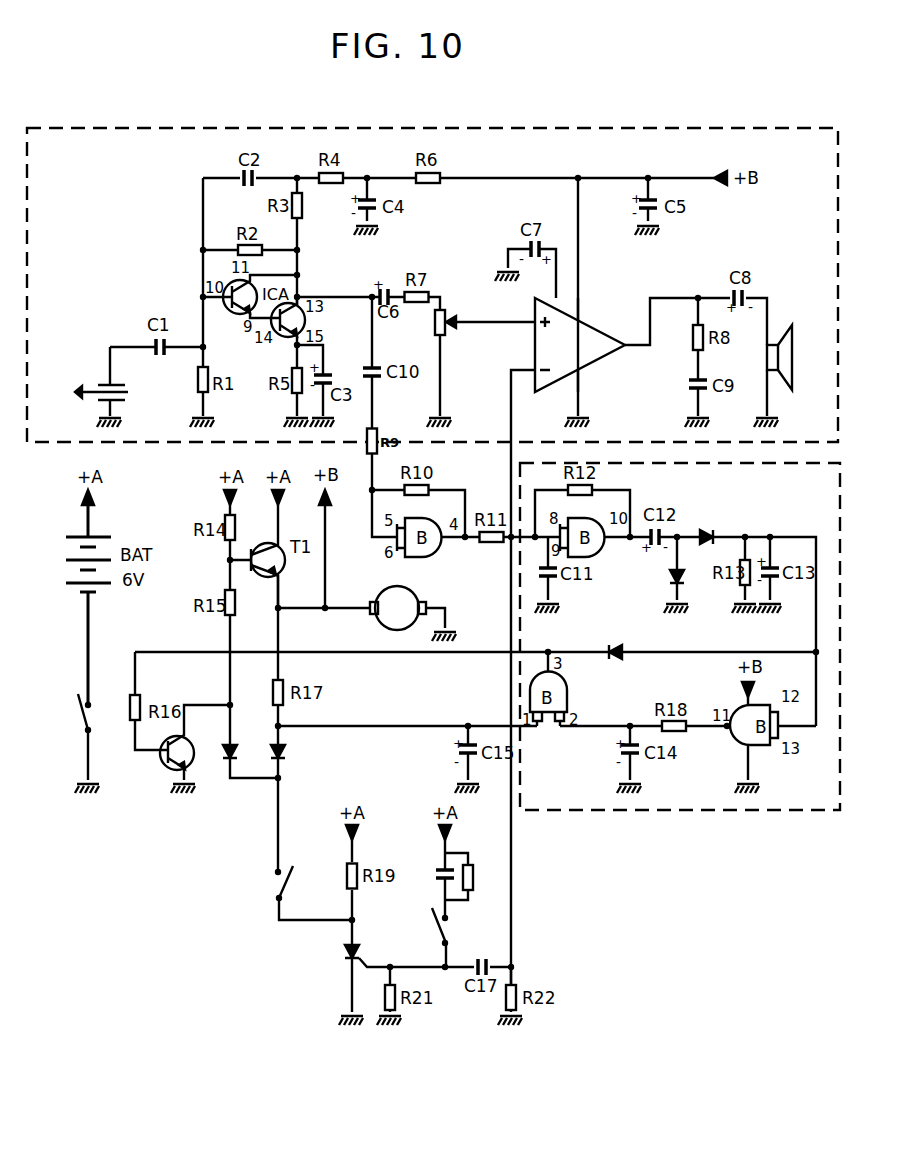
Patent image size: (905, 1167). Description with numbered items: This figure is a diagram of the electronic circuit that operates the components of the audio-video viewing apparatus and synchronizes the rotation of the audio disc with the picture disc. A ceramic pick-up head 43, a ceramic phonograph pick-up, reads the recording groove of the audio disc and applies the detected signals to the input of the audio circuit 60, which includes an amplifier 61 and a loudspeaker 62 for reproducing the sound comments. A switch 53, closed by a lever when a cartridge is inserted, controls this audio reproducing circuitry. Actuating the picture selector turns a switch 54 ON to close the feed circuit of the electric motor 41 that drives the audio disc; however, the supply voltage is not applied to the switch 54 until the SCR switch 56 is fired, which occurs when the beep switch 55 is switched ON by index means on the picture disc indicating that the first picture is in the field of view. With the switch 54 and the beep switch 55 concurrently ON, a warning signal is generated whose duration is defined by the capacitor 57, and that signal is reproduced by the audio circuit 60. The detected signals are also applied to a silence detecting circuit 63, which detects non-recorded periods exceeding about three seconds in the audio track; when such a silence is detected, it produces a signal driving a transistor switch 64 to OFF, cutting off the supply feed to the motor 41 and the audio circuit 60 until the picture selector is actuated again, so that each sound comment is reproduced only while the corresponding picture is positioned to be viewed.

The electric motor 41 is at (410, 600).
The ceramic pick-up head 43 is at (107, 338).
The switch 53 is at (85, 726).
The switch 54 is at (277, 882).
The beep switch 55 is at (450, 942).
The SCR switch 56 is at (350, 965).
The capacitor 57 is at (425, 870).
The audio circuit 60 is at (175, 128).
The amplifier 61 is at (592, 356).
The loudspeaker 62 is at (783, 332).
The silence detecting circuit 63 is at (710, 800).
The transistor switch 64 is at (174, 773).